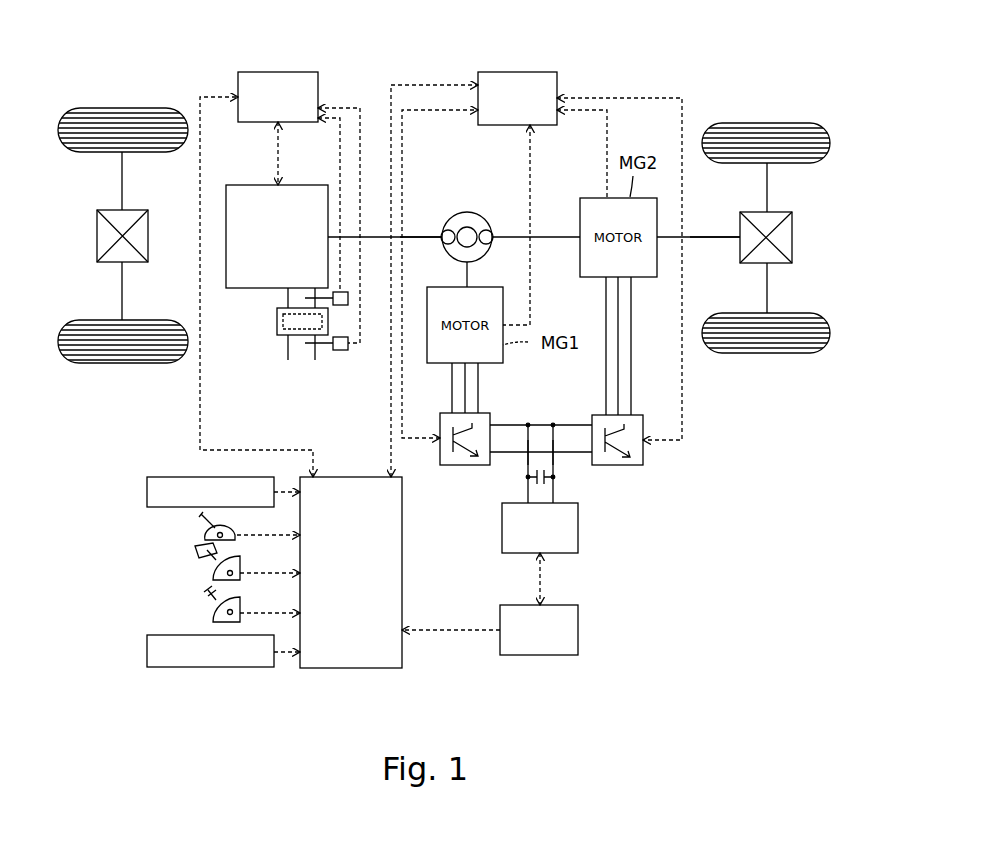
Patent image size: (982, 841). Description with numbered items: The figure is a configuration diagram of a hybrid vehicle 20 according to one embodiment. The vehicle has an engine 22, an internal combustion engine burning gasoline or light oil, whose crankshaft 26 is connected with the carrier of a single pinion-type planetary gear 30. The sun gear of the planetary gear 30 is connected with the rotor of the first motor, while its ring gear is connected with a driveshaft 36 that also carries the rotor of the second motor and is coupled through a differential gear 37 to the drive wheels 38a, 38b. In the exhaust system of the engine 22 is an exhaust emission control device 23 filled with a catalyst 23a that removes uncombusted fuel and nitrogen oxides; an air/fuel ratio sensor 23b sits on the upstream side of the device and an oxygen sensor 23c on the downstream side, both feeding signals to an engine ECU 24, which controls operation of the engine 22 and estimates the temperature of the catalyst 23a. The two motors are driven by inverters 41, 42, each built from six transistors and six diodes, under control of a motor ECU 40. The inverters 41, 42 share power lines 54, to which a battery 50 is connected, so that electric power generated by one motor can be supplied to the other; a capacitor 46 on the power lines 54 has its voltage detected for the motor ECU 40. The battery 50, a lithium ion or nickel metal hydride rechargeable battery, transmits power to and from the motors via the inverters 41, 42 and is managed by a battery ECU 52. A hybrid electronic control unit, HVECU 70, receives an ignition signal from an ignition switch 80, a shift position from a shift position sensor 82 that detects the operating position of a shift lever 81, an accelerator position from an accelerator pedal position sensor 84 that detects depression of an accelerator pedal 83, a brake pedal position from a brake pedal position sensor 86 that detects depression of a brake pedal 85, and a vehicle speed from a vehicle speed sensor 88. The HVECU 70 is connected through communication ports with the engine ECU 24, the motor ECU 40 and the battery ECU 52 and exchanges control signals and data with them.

The hybrid vehicle 20 is at (645, 48).
The engine 22 is at (302, 185).
The exhaust emission control device 23 is at (277, 312).
The catalyst 23a is at (283, 322).
The air/fuel ratio sensor 23b is at (348, 300).
The oxygen sensor 23c is at (340, 350).
The engine ECU 24 is at (280, 70).
The crankshaft 26 is at (421, 236).
The planetary gear 30 is at (467, 212).
The driveshaft 36 is at (708, 235).
The differential gear 37 is at (778, 211).
The drive wheel 38a is at (766, 122).
The drive wheel 38b is at (765, 354).
The motor ECU 40 is at (532, 72).
The inverter 41 is at (484, 412).
The inverter 42 is at (637, 413).
The capacitor 46 is at (556, 480).
The battery 50 is at (502, 529).
The battery ECU 52 is at (578, 630).
The power lines 54 is at (520, 462).
The HVECU 70 is at (402, 570).
The ignition switch 80 is at (147, 492).
The shift lever 81 is at (198, 523).
The shift position sensor 82 is at (203, 537).
The accelerator pedal 83 is at (197, 561).
The accelerator pedal position sensor 84 is at (212, 576).
The brake pedal 85 is at (207, 601).
The brake pedal position sensor 86 is at (212, 617).
The vehicle speed sensor 88 is at (147, 651).